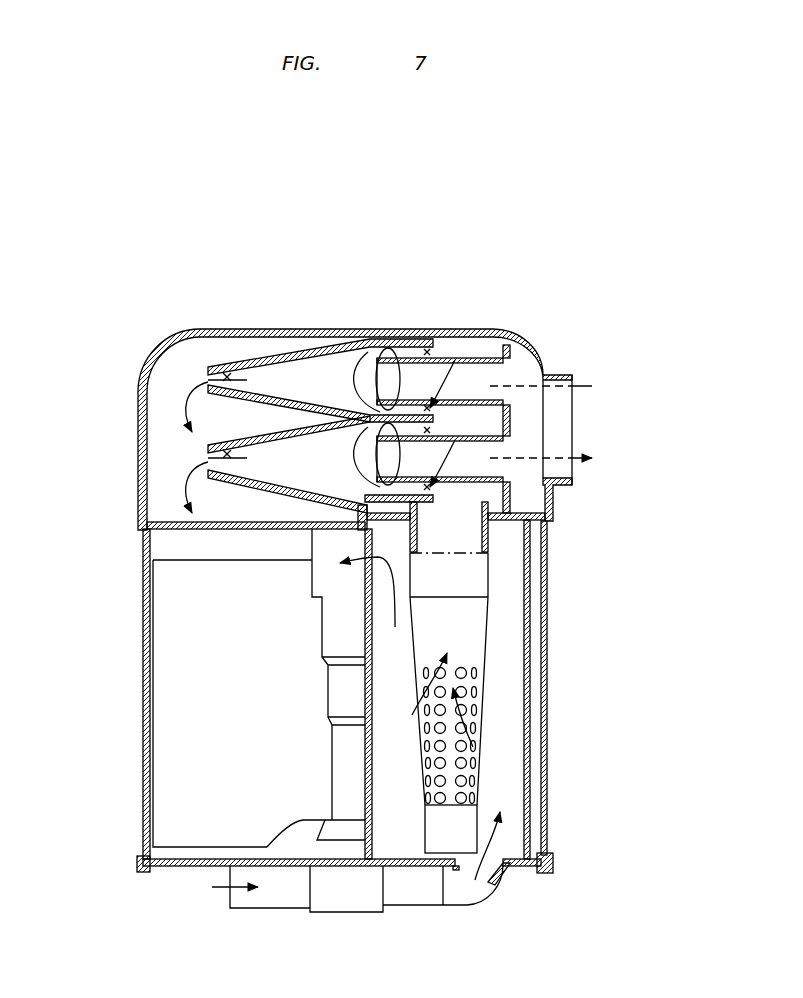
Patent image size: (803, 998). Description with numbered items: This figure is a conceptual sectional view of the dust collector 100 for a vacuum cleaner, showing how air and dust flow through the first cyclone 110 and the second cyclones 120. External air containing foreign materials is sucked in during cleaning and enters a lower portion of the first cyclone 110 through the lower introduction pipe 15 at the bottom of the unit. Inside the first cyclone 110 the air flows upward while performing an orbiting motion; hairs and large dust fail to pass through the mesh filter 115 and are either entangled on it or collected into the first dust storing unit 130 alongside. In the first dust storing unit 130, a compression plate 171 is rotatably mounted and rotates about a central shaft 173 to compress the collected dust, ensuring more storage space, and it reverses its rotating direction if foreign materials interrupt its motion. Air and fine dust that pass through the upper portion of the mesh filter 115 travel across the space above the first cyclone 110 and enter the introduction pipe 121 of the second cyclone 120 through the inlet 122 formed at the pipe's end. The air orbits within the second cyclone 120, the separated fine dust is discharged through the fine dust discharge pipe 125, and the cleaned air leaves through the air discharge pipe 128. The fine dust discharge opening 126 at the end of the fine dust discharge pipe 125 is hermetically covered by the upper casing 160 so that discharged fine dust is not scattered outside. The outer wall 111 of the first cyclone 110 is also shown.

The dust collector 100 is at (165, 333).
The second cyclone 120 is at (348, 374).
The fine dust discharge pipe 125 is at (300, 351).
The introduction pipe 121 is at (386, 357).
The air discharge pipe 128 is at (456, 357).
The fine dust discharge opening 126 is at (208, 456).
The upper casing 160 is at (140, 478).
The inlet 122 is at (450, 478).
The first cyclone 110 is at (374, 700).
The container outer wall 111 is at (545, 669).
The mesh filter 115 is at (470, 630).
The first dust storing unit 130 is at (147, 691).
The compression plate 171 is at (190, 745).
The central shaft 173 is at (345, 780).
The lower introduction pipe 15 is at (497, 872).